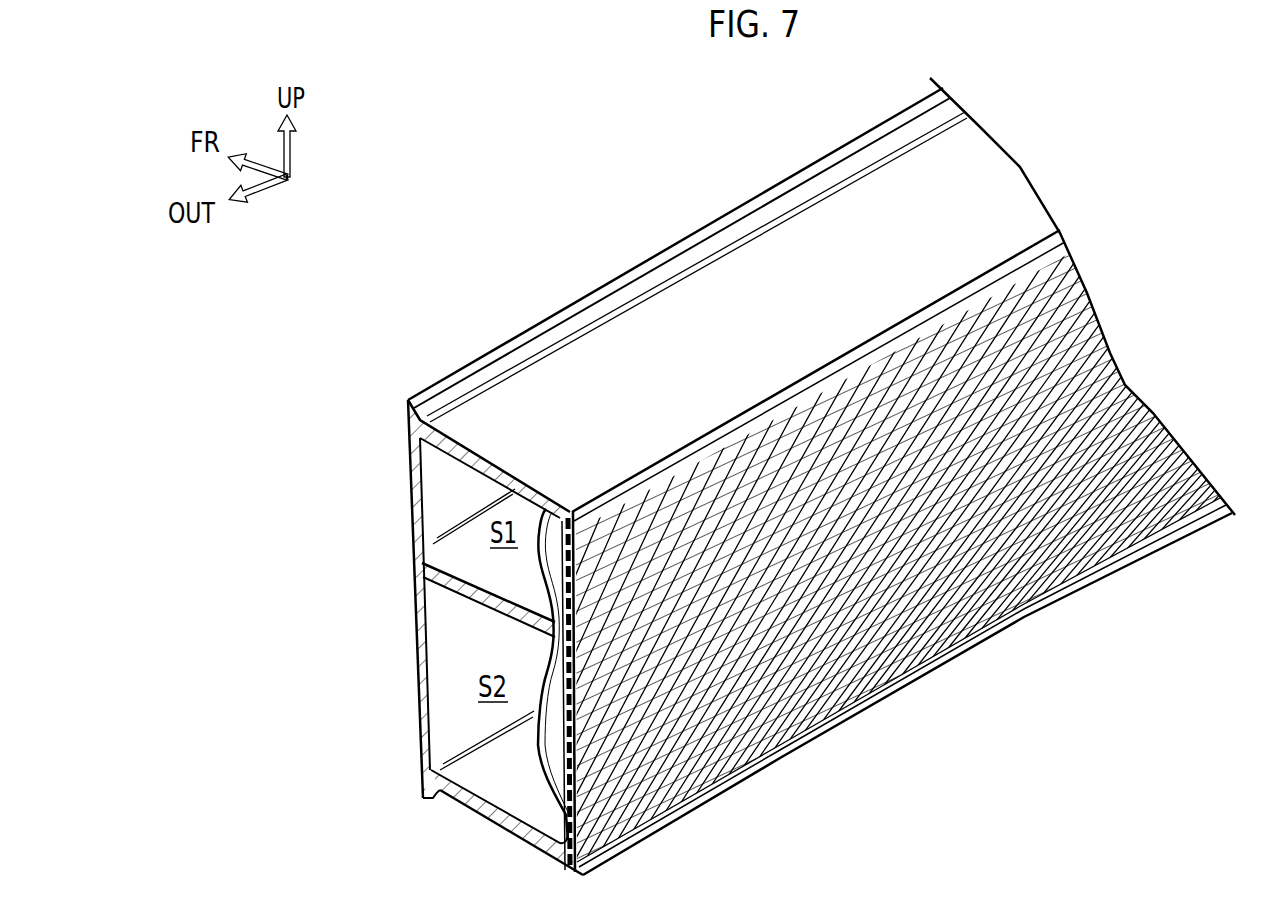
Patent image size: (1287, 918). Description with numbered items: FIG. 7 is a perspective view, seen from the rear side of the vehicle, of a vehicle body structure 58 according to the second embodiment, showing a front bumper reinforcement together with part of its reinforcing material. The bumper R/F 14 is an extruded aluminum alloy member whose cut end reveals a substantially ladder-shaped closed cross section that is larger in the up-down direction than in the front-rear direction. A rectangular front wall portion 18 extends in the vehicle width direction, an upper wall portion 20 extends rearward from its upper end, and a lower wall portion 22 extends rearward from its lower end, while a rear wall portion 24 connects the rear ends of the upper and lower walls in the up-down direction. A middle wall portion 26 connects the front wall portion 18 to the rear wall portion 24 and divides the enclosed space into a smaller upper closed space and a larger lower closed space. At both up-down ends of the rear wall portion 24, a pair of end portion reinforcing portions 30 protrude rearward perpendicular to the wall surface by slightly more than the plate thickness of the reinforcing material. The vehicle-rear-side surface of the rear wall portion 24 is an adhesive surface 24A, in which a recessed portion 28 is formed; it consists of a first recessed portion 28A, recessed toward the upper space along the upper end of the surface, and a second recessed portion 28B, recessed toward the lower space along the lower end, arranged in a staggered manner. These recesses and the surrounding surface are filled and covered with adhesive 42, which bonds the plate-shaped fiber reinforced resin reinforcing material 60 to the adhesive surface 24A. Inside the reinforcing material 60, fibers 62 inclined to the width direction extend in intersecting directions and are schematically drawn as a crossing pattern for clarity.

The bumper R/F 14 is at (612, 274).
The vehicle body structure 58 is at (624, 144).
The upper wall portion 20 is at (795, 268).
The end portion reinforcing portion 30 is at (752, 411).
The reinforcing material 60 is at (603, 830).
The fibers 62 is at (745, 762).
The front wall portion 18 is at (408, 478).
The lower wall portion 22 is at (487, 815).
The middle wall portion 26 is at (485, 562).
The rear wall portion 24 is at (547, 675).
The adhesive surface 24A is at (573, 623).
The recessed portion 28 is at (528, 645).
The first recessed portion 28A is at (565, 521).
The second recessed portion 28B is at (557, 788).
The adhesive 42 is at (528, 738).